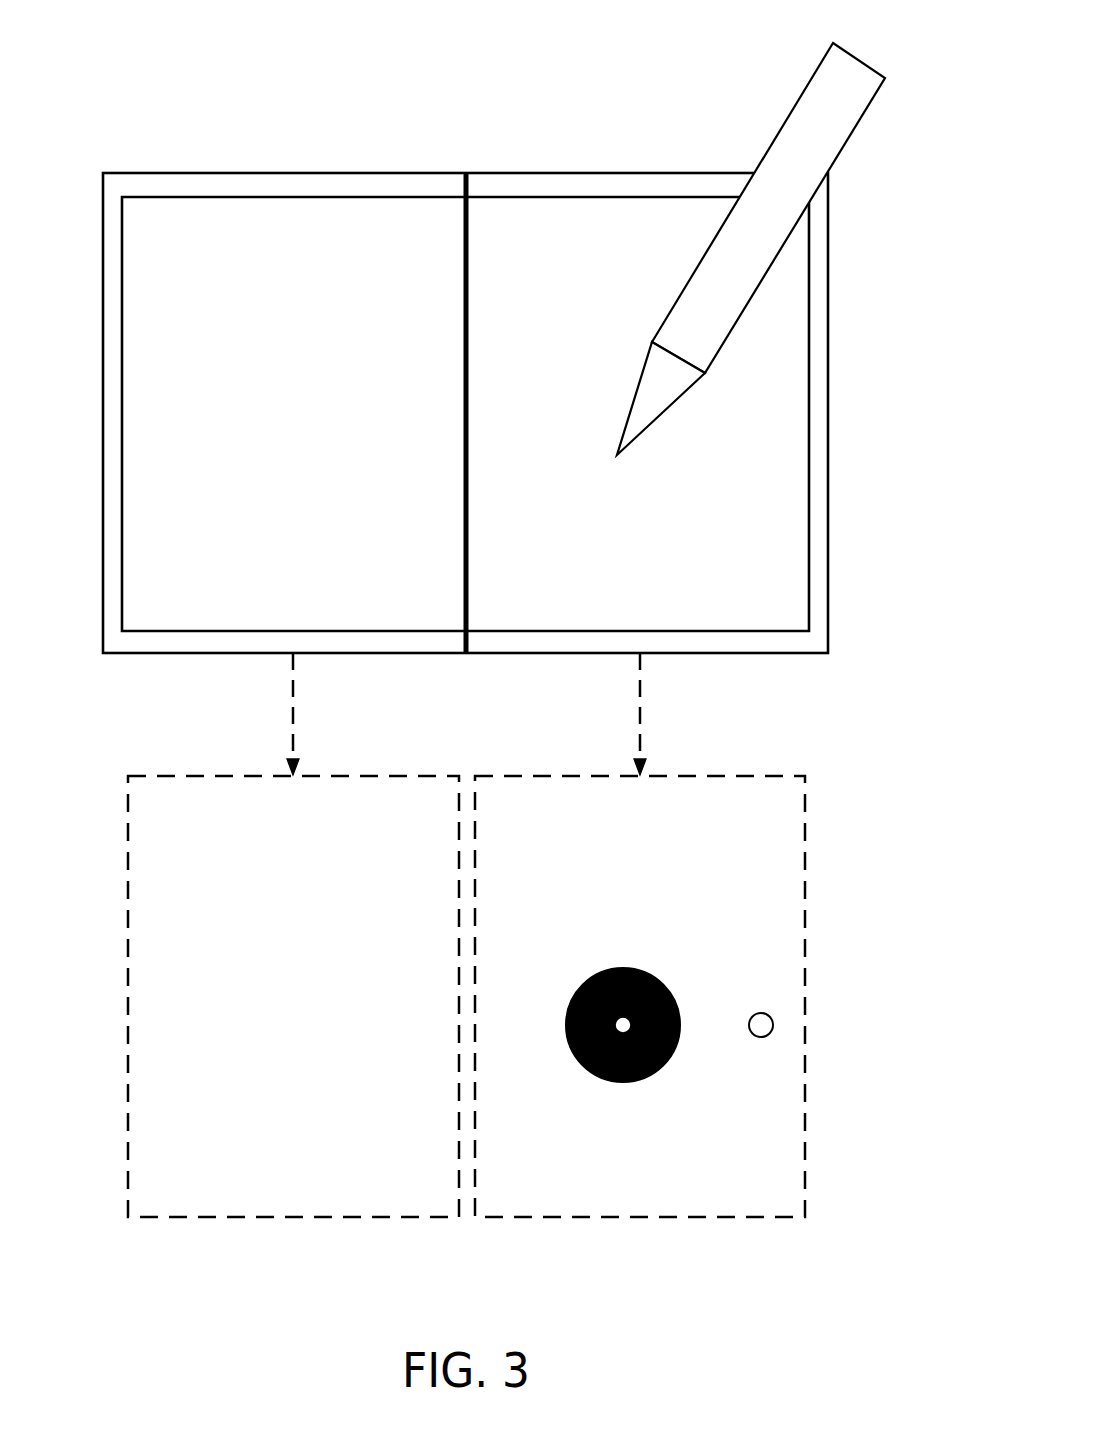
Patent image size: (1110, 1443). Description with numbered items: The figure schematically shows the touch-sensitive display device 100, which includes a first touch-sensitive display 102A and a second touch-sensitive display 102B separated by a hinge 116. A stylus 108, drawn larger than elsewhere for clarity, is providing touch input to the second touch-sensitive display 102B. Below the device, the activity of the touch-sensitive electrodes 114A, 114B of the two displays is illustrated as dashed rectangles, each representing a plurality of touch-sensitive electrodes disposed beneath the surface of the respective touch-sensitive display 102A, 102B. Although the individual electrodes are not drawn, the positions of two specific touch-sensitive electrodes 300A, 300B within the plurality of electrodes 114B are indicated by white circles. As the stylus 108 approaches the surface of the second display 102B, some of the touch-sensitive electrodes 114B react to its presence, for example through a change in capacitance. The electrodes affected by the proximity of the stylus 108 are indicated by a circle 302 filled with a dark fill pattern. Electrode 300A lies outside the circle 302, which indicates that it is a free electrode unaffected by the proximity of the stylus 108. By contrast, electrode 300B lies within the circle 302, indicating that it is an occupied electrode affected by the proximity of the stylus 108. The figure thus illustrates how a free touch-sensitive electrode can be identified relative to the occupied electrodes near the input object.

The touch-sensitive display device 100 is at (530, 118).
The first touch-sensitive display 102A is at (122, 388).
The second touch-sensitive display 102B is at (808, 392).
The stylus 108 is at (833, 43).
The hinge 116 is at (466, 173).
The touch-sensitive electrodes of the first display 114A is at (148, 776).
The touch-sensitive electrodes of the second display 114B is at (487, 776).
The free touch-sensitive electrode 300A is at (760, 1037).
The occupied touch-sensitive electrode 300B is at (621, 1016).
The circle of affected electrodes 302 is at (590, 1071).